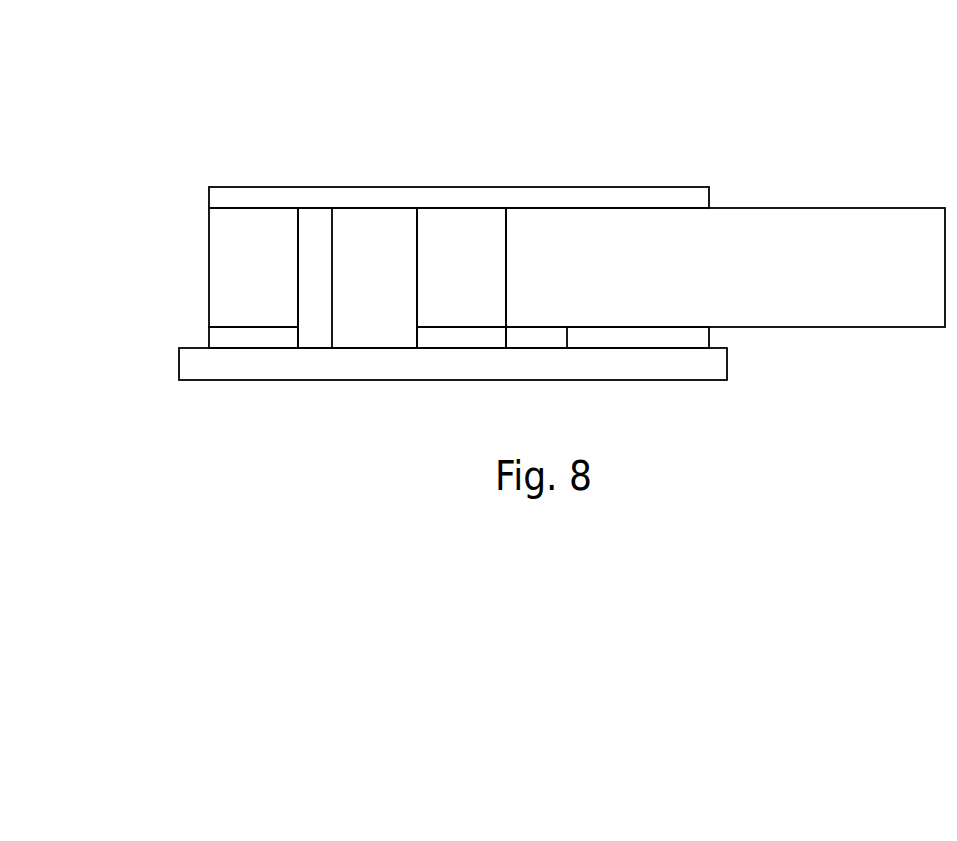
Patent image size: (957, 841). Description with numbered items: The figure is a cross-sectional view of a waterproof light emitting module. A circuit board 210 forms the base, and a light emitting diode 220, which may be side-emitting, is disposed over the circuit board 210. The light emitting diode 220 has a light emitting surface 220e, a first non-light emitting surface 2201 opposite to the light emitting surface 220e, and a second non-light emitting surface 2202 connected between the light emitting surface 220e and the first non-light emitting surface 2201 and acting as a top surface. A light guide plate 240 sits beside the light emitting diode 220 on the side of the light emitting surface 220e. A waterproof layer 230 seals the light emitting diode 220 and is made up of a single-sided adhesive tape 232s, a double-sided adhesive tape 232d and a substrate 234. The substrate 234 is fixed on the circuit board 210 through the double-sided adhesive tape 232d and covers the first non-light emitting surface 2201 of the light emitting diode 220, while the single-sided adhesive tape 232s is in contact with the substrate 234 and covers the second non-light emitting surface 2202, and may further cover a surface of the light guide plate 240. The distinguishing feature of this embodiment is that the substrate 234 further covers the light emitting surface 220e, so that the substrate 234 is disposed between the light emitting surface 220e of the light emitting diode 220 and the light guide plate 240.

The circuit board 210 is at (688, 362).
The light emitting diode 220 is at (367, 333).
The first non-light emitting surface 2201 is at (328, 226).
The second non-light emitting surface 2202 is at (372, 204).
The light emitting surface 220e is at (420, 226).
The waterproof layer 230 is at (132, 177).
The single-sided adhesive tape 232s is at (573, 197).
The double-sided adhesive tape 232d is at (223, 333).
The substrate 234 is at (477, 228).
The light guide plate 240 is at (863, 315).